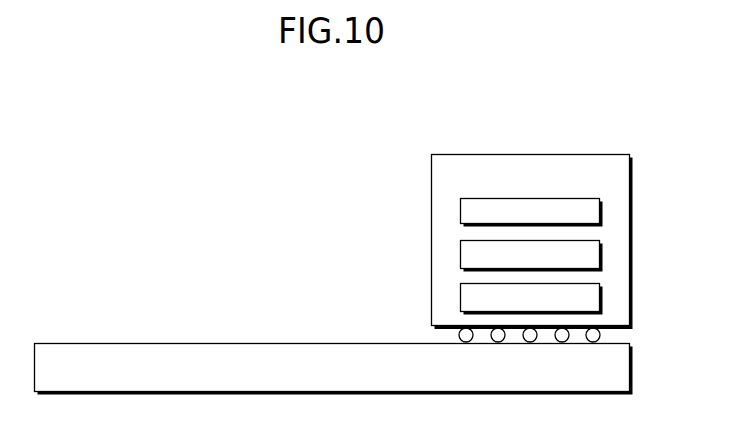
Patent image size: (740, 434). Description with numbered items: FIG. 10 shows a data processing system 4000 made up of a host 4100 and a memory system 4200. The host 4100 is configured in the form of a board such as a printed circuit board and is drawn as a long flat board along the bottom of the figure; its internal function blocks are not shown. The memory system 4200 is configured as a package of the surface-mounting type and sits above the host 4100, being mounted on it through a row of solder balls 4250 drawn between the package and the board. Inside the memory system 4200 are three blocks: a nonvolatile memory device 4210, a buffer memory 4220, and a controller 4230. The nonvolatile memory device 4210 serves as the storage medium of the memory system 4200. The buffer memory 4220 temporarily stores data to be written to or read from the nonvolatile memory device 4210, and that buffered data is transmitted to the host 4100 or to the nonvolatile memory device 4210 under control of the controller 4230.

The data processing system 4000 is at (113, 123).
The host 4100 is at (333, 369).
The memory system 4200 is at (532, 241).
The nonvolatile memory device 4210 is at (531, 211).
The buffer memory 4220 is at (531, 256).
The controller 4230 is at (531, 299).
The solder balls 4250 is at (610, 337).